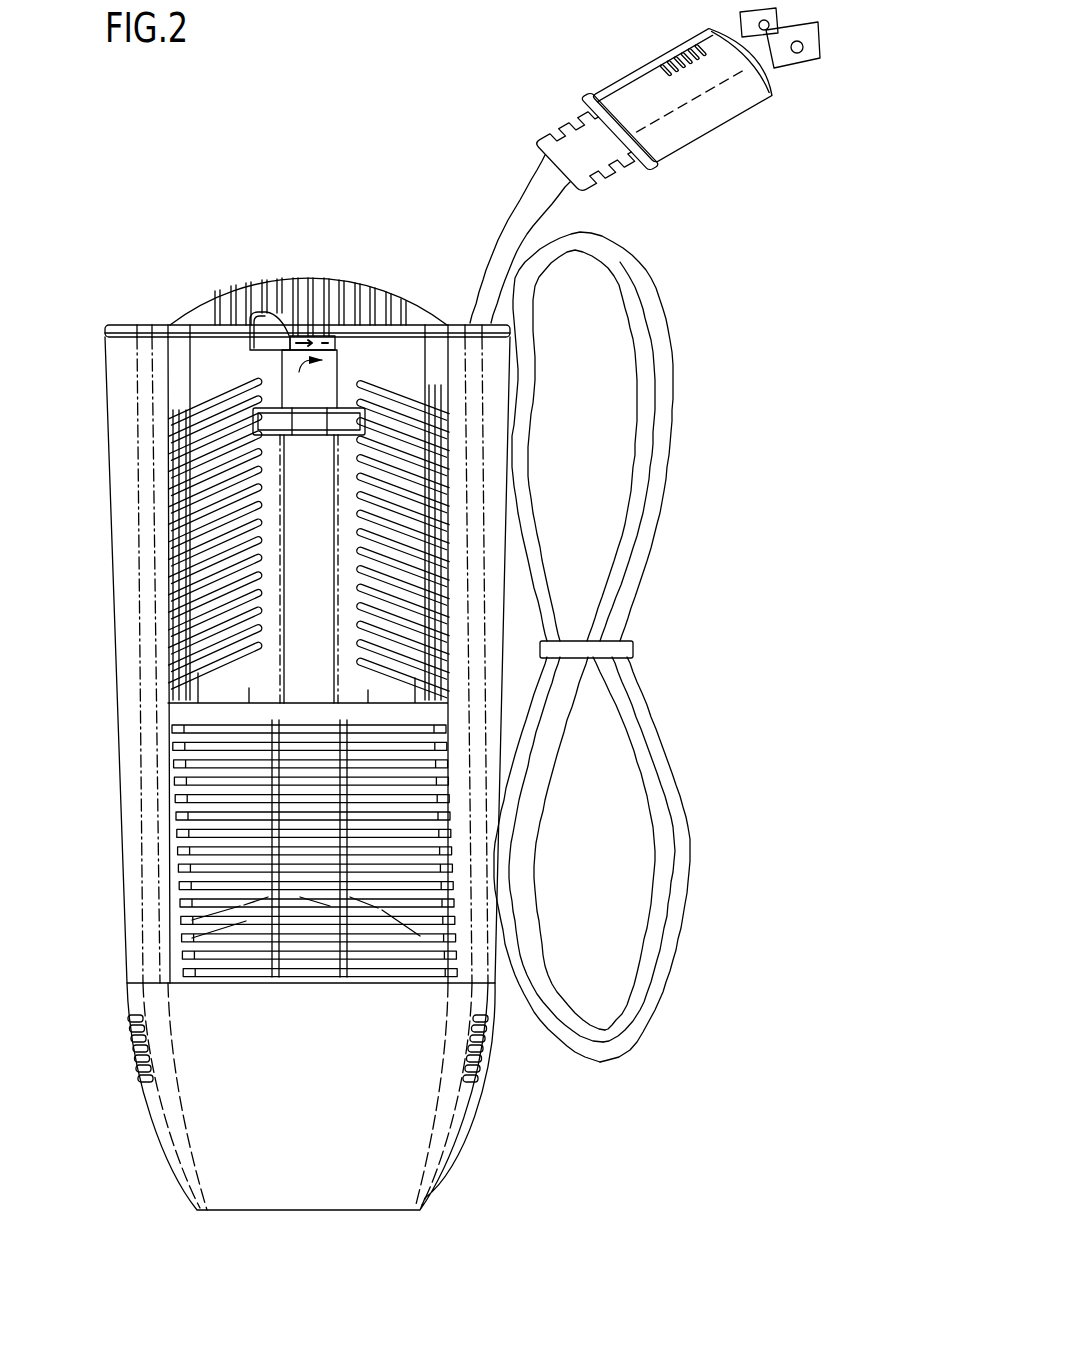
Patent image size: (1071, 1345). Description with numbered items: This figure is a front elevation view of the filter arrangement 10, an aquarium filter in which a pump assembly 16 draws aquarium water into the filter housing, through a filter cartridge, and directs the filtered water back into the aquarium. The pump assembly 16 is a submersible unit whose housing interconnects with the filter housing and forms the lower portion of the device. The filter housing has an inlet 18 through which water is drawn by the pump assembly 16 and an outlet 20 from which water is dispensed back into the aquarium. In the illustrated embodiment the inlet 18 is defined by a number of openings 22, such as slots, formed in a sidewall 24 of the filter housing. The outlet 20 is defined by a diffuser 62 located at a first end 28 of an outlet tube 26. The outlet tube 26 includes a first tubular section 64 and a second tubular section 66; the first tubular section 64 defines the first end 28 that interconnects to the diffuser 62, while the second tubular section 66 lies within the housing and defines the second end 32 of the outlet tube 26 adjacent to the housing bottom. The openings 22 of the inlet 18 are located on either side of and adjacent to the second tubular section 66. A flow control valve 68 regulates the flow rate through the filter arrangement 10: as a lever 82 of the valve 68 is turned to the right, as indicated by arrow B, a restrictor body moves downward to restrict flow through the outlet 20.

The filter arrangement 10 is at (802, 318).
The pump assembly 16 is at (142, 1102).
The inlet 18 is at (143, 580).
The outlet 20 is at (347, 405).
The openings 22 is at (163, 470).
The sidewall 24 is at (130, 695).
The outlet tube 26 is at (340, 600).
The first end 28 is at (340, 463).
The second end 32 is at (348, 918).
The diffuser 62 is at (272, 405).
The first tubular section 64 is at (302, 559).
The second tubular section 66 is at (287, 817).
The flow control valve 68 is at (327, 336).
The lever 82 is at (266, 322).